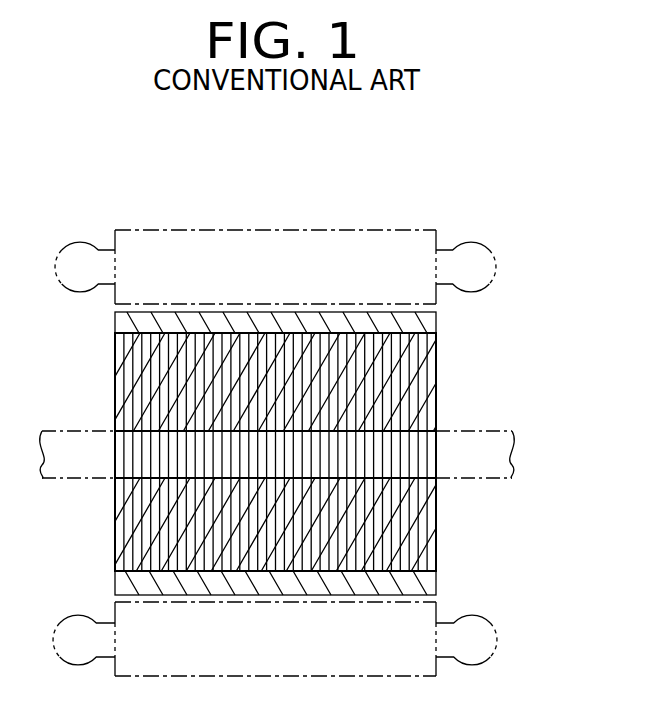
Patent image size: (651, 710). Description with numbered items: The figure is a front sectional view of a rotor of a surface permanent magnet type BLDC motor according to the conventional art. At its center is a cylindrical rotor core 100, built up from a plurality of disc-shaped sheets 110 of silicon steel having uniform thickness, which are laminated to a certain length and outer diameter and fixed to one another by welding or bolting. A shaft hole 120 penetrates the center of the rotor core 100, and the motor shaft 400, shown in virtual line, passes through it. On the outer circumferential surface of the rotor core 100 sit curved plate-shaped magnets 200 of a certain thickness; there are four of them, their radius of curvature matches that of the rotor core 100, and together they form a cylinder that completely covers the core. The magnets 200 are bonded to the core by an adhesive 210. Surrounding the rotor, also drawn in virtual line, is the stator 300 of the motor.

The rotor core 100 is at (463, 352).
The disc-shaped sheets 110 is at (128, 353).
The shaft hole 120 is at (405, 471).
The curved plate-shaped magnets 200 is at (268, 298).
The adhesive 210 is at (340, 333).
The stator 300 is at (193, 243).
The motor shaft 400 is at (466, 468).